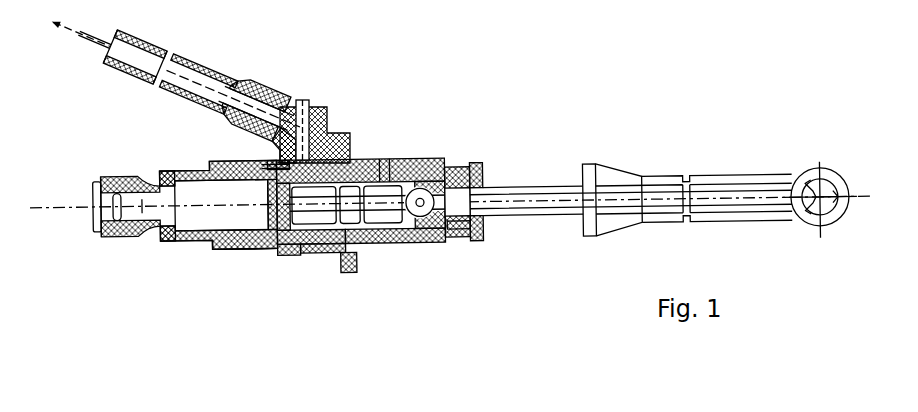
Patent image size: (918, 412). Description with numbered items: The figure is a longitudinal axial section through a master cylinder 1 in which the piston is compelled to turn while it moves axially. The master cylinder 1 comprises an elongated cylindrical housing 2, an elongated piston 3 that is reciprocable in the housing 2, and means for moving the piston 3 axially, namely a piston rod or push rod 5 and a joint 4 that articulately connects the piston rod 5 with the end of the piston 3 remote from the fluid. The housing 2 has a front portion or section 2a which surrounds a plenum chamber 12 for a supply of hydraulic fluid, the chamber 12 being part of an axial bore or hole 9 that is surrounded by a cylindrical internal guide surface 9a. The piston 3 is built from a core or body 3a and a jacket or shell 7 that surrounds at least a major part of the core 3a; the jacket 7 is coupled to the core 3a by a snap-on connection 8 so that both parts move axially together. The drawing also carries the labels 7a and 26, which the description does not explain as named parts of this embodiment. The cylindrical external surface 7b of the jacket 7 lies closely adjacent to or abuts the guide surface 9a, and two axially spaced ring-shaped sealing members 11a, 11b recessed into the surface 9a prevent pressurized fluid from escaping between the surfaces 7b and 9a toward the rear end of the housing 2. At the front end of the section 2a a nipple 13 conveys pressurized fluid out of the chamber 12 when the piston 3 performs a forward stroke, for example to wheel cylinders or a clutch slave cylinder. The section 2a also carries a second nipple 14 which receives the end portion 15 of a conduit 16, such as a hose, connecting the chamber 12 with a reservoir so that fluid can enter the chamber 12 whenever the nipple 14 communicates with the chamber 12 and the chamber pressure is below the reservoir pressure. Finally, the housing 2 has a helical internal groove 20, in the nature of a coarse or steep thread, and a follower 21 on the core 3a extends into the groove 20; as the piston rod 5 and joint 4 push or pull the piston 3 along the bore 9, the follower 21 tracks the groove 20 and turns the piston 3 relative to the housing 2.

The master cylinder 1 is at (485, 86).
The housing 2 is at (199, 260).
The front portion or section 2a is at (253, 251).
The piston 3 is at (401, 156).
The core or body 3a is at (417, 163).
The means for articulately connecting 4 is at (447, 165).
The piston rod or push rod 5 is at (540, 192).
The jacket or shell 7 is at (307, 256).
The front seal 7a is at (273, 171).
The cylindrical external surface 7b is at (397, 255).
The snap-on connection 8 is at (461, 245).
The axial bore or hole 9 is at (218, 248).
The cylindrical internal guide surface 9a is at (161, 177).
The ring-shaped sealing member 11a is at (283, 258).
The ring-shaped sealing member 11b is at (343, 275).
The plenum chamber 12 is at (183, 219).
The nipple 13 is at (113, 240).
The second nipple 14 is at (297, 100).
The end portion 15 is at (247, 83).
The conduit 16 is at (158, 52).
The helical internal groove 20 is at (433, 246).
The follower 21 is at (485, 242).
The bore 26 is at (385, 163).